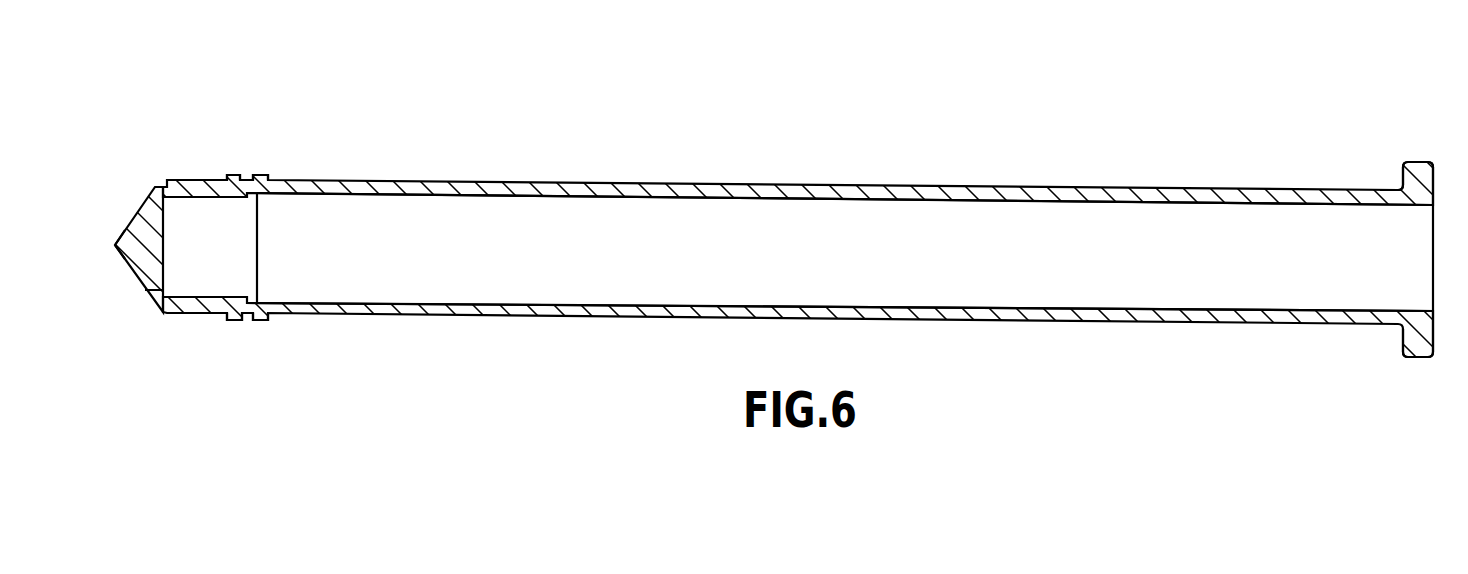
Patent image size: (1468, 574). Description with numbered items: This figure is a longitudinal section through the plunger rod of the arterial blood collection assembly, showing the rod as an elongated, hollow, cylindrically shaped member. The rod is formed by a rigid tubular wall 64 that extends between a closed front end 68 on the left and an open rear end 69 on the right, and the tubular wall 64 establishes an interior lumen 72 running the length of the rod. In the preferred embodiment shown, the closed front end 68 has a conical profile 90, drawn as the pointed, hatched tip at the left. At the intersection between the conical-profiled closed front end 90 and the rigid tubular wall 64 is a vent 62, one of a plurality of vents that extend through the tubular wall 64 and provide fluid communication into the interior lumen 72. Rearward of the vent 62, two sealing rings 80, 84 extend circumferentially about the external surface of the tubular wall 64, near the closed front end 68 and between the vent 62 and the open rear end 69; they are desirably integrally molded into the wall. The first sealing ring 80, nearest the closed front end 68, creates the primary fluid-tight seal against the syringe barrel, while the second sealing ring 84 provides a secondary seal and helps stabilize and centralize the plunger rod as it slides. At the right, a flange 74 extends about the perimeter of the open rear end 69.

The vent 62 is at (152, 302).
The rigid tubular wall 64 is at (672, 186).
The closed front end 68 is at (175, 156).
The open rear end 69 is at (1382, 174).
The interior lumen 72 is at (683, 257).
The flange 74 is at (1412, 170).
The first sealing ring 80 is at (232, 321).
The second sealing ring 84 is at (258, 321).
The conical profile 90 is at (114, 243).